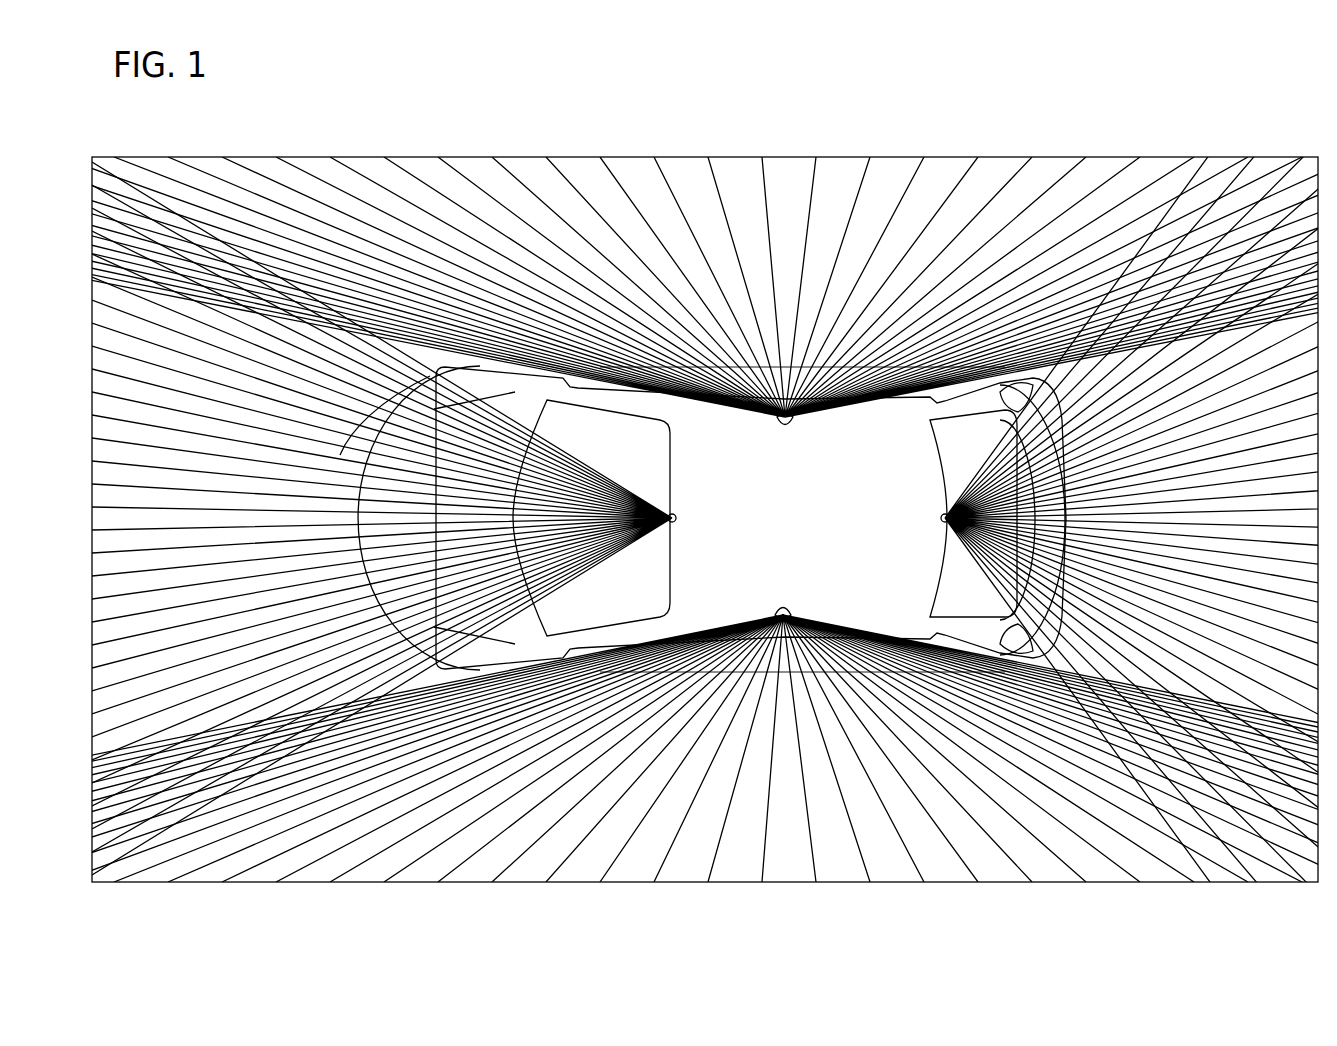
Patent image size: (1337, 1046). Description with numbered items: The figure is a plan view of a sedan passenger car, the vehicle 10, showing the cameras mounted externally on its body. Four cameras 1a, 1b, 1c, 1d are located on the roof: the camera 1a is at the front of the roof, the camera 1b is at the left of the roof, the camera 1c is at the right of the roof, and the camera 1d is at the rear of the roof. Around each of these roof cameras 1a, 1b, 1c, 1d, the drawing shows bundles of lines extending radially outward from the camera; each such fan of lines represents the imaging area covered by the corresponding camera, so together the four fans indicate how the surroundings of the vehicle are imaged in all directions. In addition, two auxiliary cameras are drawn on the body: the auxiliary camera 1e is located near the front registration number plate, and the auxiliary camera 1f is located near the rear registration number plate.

The vehicle sensor system 10 is at (1244, 137).
The camera 1a is at (672, 524).
The camera 1b is at (785, 620).
The camera 1c is at (785, 412).
The camera 1d is at (945, 524).
The auxiliary camera 1e is at (440, 372).
The auxiliary camera 1f is at (1050, 395).